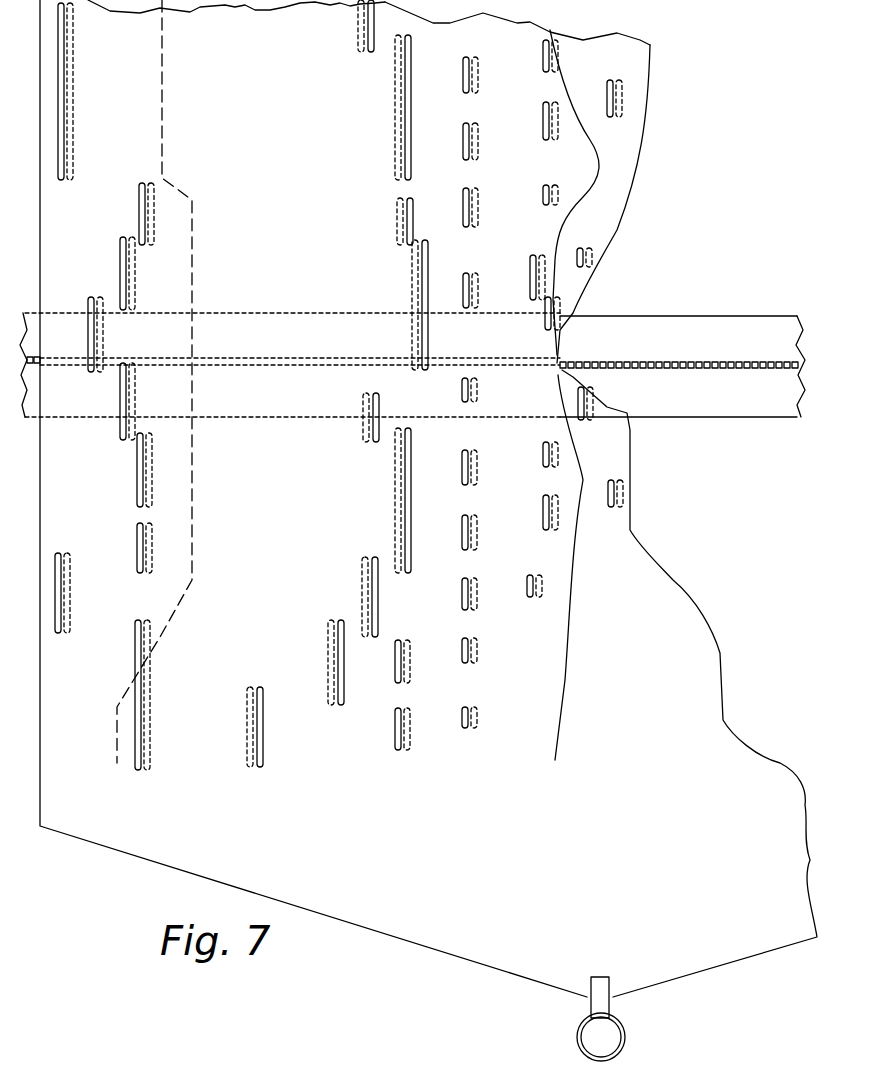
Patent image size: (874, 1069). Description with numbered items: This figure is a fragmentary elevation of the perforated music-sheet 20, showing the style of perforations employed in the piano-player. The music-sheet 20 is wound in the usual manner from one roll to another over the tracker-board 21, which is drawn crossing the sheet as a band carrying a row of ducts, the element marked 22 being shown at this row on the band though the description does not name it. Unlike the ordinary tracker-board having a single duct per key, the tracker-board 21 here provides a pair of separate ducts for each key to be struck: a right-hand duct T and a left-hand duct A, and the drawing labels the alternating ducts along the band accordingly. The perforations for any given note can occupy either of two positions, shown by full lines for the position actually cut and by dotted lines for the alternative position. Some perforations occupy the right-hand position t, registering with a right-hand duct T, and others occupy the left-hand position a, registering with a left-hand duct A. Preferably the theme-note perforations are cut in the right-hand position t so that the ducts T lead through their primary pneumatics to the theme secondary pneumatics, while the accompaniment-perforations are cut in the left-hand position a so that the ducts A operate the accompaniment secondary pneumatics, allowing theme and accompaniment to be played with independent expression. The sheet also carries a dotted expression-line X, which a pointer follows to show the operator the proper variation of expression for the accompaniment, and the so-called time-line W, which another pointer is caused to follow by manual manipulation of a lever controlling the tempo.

The left-hand position a is at (57, 95).
The right-hand position t is at (375, 30).
The left-hand duct A is at (575, 360).
The right-hand duct T is at (583, 360).
The expression-line X is at (236, 508).
The time-line W is at (563, 725).
The perforated music-sheet 20 is at (601, 531).
The tracker-board 21 is at (412, 365).
The chain 22 is at (757, 372).